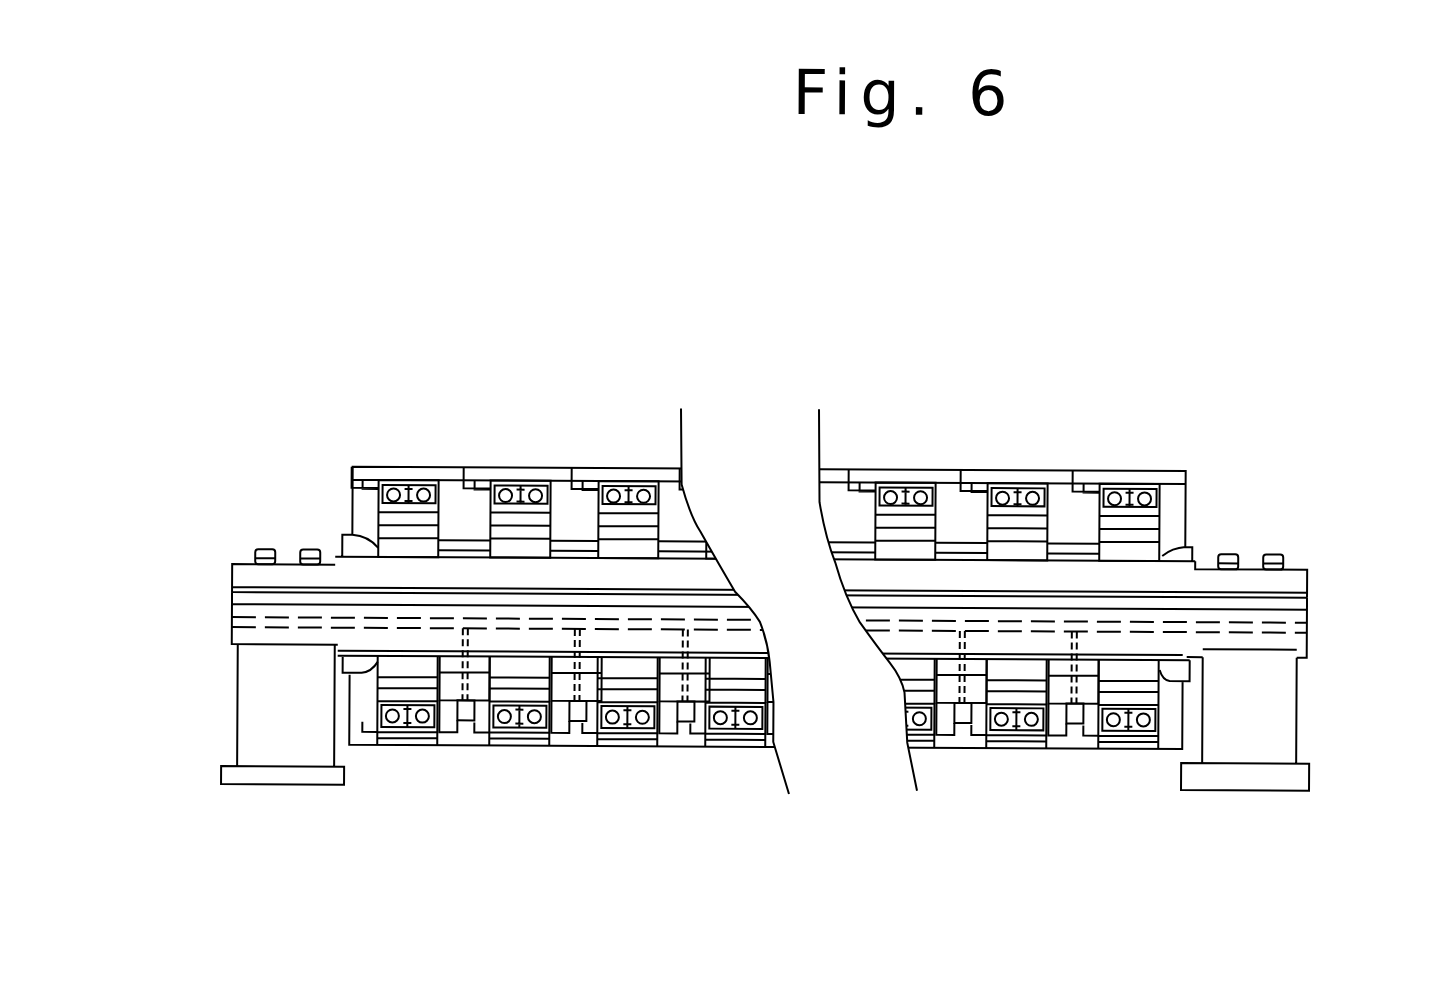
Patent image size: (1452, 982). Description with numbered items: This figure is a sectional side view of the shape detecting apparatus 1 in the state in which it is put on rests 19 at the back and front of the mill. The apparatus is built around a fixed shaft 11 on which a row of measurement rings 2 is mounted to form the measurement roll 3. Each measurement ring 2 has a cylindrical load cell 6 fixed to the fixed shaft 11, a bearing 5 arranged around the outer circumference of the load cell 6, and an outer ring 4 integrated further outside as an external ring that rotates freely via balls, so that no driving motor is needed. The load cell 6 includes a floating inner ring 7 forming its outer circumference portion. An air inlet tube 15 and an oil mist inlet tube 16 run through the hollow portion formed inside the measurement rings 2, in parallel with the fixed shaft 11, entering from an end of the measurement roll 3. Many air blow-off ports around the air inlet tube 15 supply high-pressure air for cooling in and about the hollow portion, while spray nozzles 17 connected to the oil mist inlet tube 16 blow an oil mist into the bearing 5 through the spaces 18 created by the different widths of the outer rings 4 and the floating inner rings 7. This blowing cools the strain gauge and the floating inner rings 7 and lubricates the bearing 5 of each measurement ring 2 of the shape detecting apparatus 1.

The shape detecting apparatus 1 is at (970, 266).
The measurement ring 2 is at (523, 470).
The measurement roll 3 is at (1187, 513).
The outer ring 4 is at (671, 742).
The bearing 5 is at (648, 715).
The load cell 6 is at (560, 680).
The floating inner ring 7 is at (597, 700).
The fixed shaft 11 is at (1310, 620).
The air inlet tube 15 is at (232, 598).
The oil mist inlet tube 16 is at (232, 633).
The spray nozzle 17 is at (458, 710).
The space 18 is at (478, 712).
The rest 19 is at (262, 728).